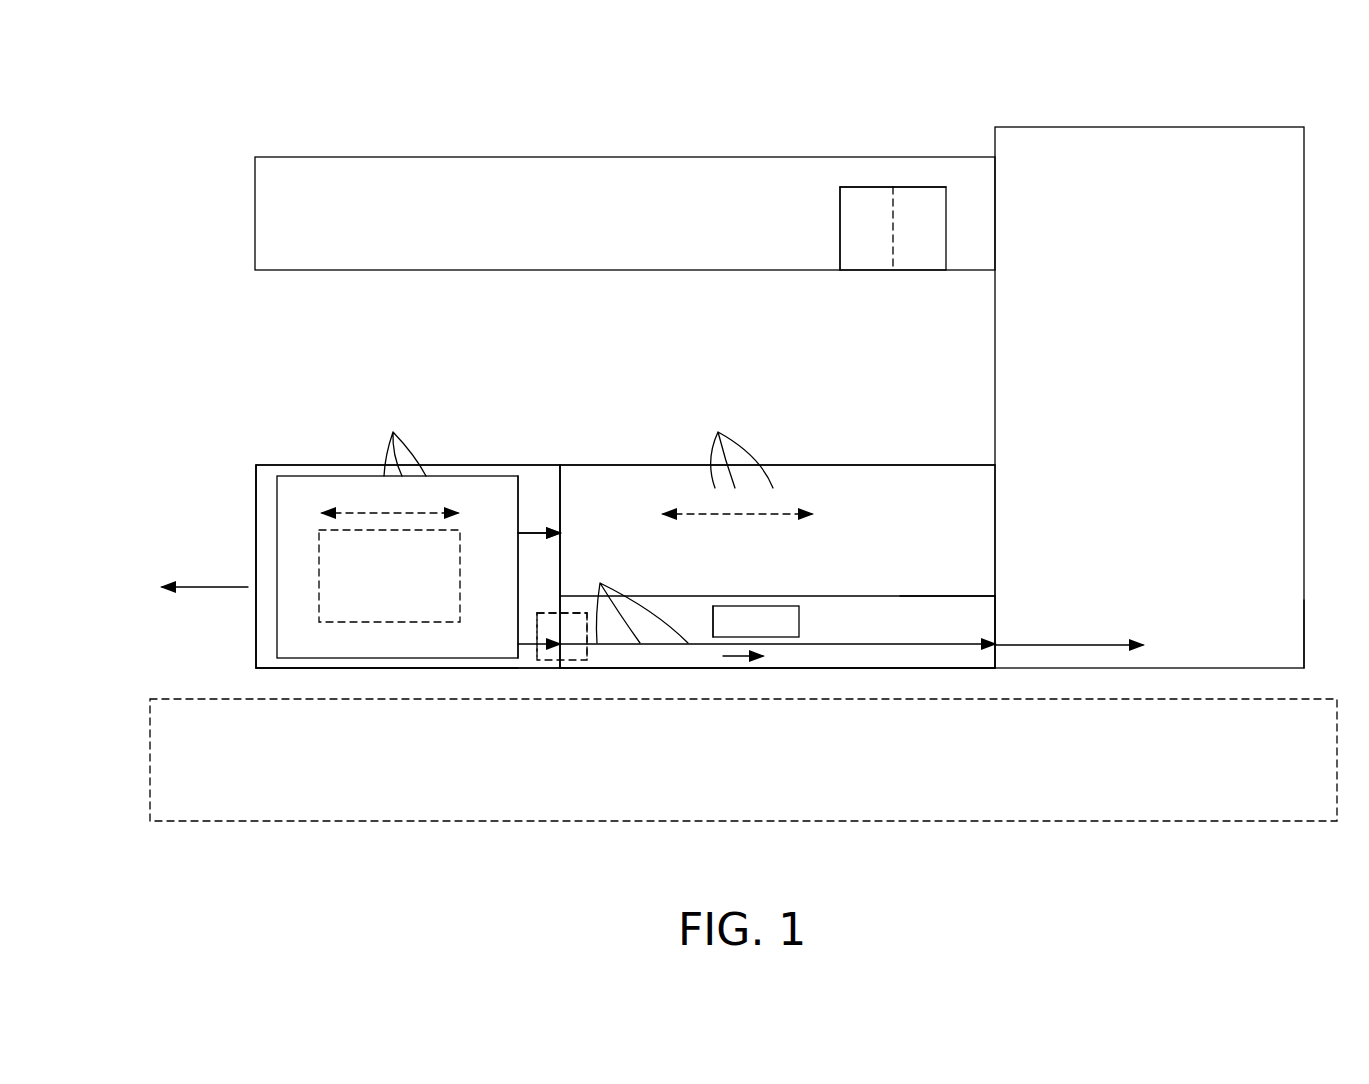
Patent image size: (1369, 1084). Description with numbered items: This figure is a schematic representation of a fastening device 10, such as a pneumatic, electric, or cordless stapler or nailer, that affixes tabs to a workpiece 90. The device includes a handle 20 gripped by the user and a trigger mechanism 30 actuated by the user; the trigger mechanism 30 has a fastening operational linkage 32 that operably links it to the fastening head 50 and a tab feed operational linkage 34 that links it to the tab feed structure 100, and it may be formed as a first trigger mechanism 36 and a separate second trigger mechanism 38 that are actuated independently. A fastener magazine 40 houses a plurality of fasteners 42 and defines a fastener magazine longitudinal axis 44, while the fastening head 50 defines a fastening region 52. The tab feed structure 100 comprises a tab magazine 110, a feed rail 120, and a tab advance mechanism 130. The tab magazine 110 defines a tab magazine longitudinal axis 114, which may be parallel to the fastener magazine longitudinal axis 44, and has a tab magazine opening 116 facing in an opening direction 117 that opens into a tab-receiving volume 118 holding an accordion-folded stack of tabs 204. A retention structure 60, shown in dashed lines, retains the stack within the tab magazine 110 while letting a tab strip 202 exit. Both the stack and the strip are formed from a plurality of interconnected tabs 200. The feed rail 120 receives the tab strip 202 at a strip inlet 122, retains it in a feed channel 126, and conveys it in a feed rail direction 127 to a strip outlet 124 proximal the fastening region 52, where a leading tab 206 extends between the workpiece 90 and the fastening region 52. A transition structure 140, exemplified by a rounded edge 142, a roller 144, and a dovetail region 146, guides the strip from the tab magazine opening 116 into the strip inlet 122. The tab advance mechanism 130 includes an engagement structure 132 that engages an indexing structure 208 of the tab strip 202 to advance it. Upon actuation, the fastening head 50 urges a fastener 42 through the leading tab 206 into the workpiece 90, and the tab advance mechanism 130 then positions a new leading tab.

The fastening device 10 is at (150, 127).
The handle 20 is at (302, 155).
The trigger mechanism 30 is at (866, 187).
The fastening operational linkage 32 is at (855, 252).
The tab feed operational linkage 34 is at (900, 252).
The first trigger mechanism 36 is at (855, 213).
The second trigger mechanism 38 is at (921, 207).
The fastener magazine 40 is at (648, 464).
The fasteners 42 is at (733, 445).
The fastener magazine longitudinal axis 44 is at (713, 514).
The fastening head 50 is at (1112, 125).
The fastening region 52 is at (1210, 652).
The retention structure 60 is at (318, 556).
The workpiece 90 is at (740, 793).
The tab feed structure 100 is at (162, 444).
The tab magazine 110 is at (325, 464).
The tab magazine longitudinal axis 114 is at (400, 513).
The tab magazine opening 116 is at (246, 500).
The opening direction 117 is at (205, 590).
The tab-receiving volume 118 is at (265, 648).
The feed rail 120 is at (663, 595).
The strip inlet 122 is at (548, 612).
The strip outlet 124 is at (1003, 617).
The feed channel 126 is at (933, 618).
The feed rail direction 127 is at (737, 658).
The tab advance mechanism 130 is at (757, 605).
The engagement structure 132 is at (735, 625).
The transition structure 140 is at (553, 662).
The rounded edge 142 is at (538, 648).
The roller 144 is at (573, 652).
The dovetail region 146 is at (578, 646).
The plurality of interconnected tabs 200 is at (531, 522).
The tab strip 202 is at (867, 640).
The accordion-folded stack of tabs 204 is at (483, 476).
The leading tab 206 is at (1080, 643).
The indexing structure 208 is at (820, 645).